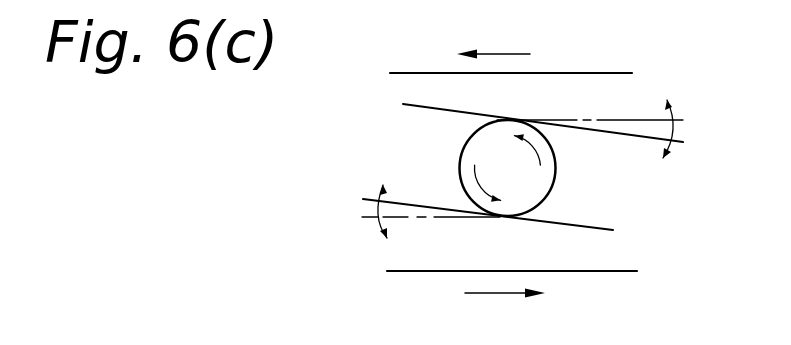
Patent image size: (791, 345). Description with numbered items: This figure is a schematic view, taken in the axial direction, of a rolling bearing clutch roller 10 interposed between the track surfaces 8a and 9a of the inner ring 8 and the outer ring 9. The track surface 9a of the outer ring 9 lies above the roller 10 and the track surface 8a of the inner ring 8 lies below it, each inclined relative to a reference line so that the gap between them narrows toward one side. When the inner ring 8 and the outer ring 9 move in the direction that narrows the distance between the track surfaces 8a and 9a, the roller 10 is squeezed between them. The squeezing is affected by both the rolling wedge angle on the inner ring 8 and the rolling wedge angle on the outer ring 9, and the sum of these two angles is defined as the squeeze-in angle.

The inner ring 8 is at (610, 257).
The track surface of the inner ring 8a is at (597, 224).
The outer ring 9 is at (580, 83).
The track surface of the outer ring 9a is at (408, 106).
The roller 10 is at (553, 177).